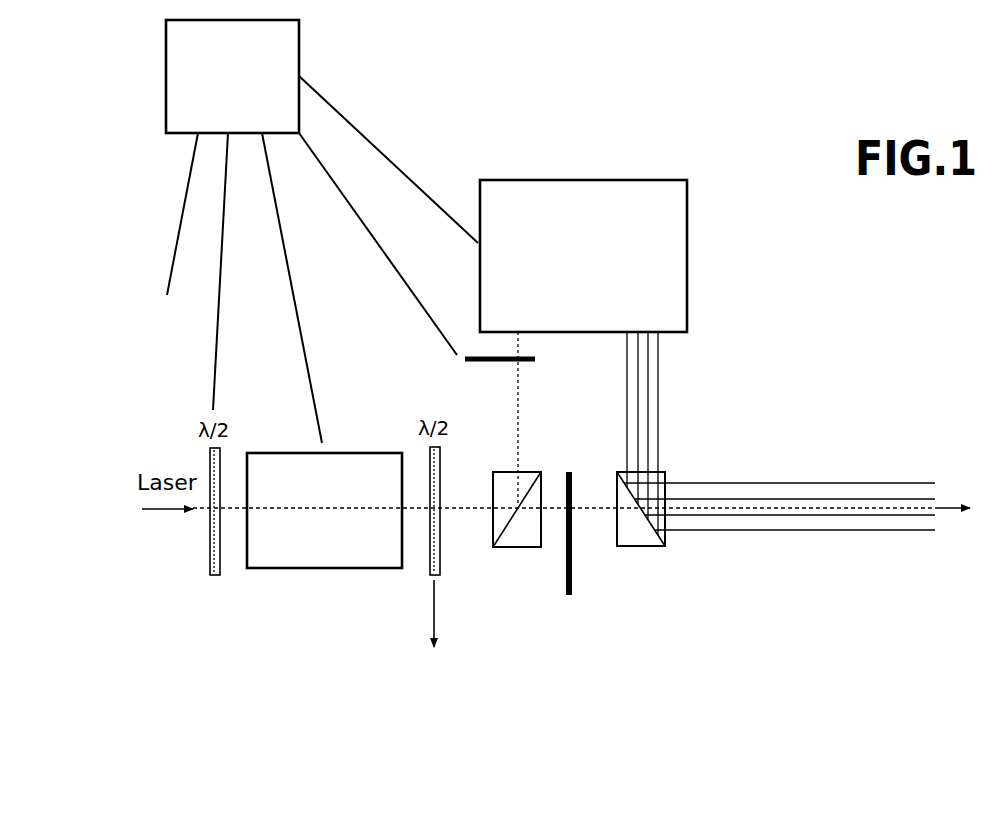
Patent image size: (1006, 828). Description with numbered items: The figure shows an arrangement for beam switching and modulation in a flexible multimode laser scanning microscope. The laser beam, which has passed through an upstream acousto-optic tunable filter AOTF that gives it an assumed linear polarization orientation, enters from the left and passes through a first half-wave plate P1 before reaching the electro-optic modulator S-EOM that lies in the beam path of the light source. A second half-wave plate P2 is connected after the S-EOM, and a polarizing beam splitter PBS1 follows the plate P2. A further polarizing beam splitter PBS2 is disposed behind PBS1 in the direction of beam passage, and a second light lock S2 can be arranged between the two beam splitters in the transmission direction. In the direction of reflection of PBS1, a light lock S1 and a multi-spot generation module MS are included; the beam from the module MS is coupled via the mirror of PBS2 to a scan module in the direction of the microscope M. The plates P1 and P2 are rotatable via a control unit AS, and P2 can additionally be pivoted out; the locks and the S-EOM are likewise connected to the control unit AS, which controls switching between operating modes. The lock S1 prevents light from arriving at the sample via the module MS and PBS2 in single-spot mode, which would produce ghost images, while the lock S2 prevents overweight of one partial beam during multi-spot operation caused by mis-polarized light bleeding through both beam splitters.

The control unit AS is at (190, 74).
The λ/2 plate P1 is at (174, 235).
The λ/2 plate P2 is at (417, 613).
The MS module MS is at (601, 190).
The light lock S1 is at (535, 360).
The second light lock S2 is at (573, 590).
The polarizing beam splitter PBS1 is at (518, 548).
The further polarizing beam splitter PBS2 is at (648, 548).
The electro-optic modulator S-EOM is at (318, 570).
The element AOTF is at (124, 512).
The microscope M is at (788, 443).